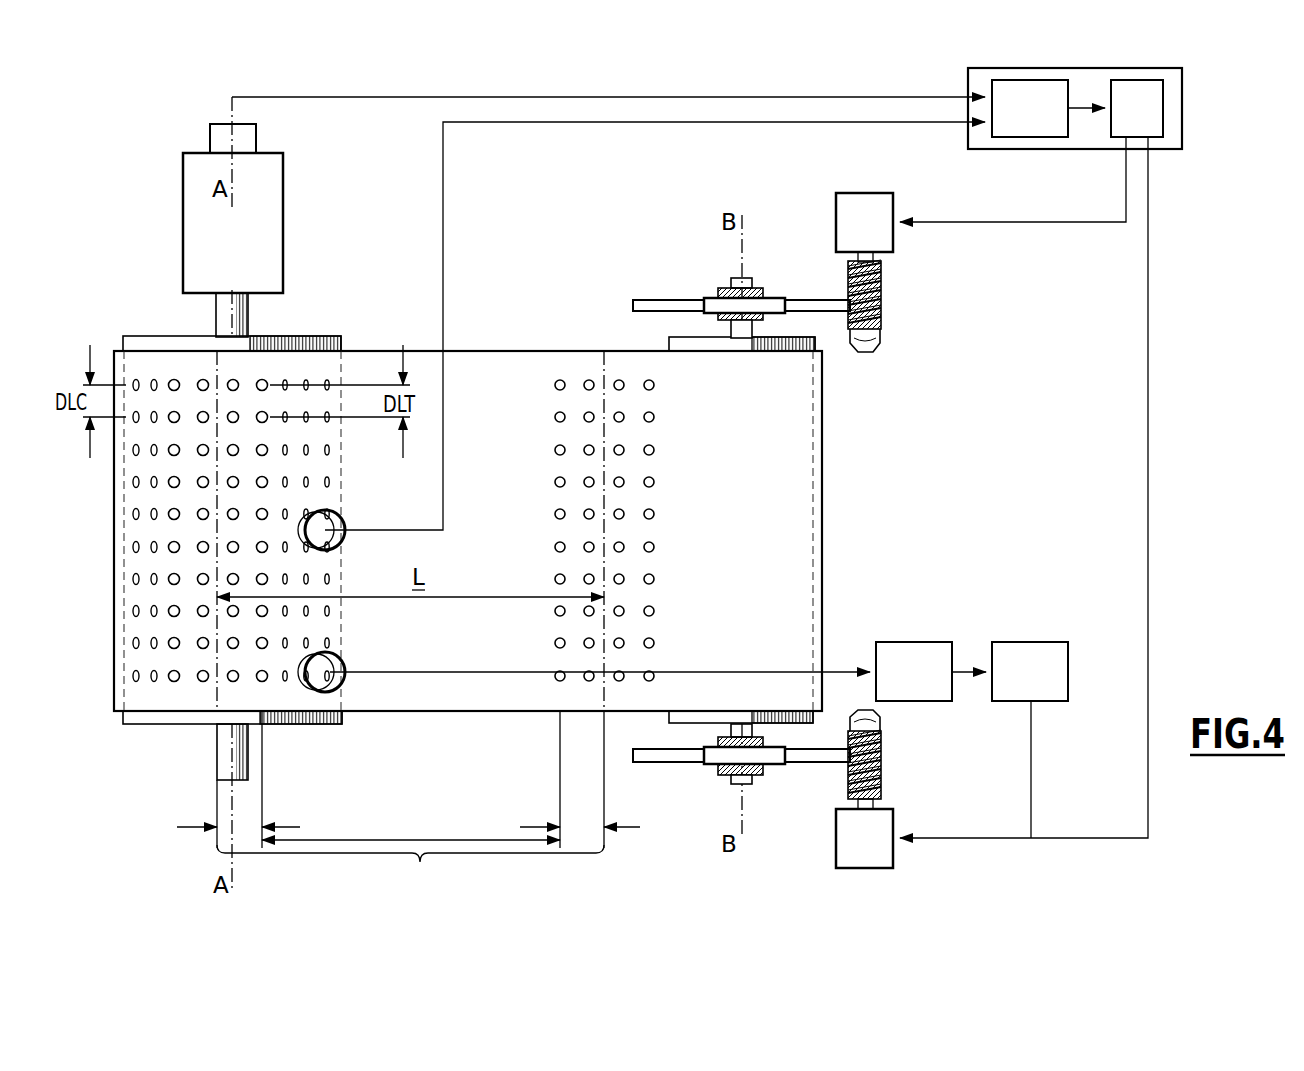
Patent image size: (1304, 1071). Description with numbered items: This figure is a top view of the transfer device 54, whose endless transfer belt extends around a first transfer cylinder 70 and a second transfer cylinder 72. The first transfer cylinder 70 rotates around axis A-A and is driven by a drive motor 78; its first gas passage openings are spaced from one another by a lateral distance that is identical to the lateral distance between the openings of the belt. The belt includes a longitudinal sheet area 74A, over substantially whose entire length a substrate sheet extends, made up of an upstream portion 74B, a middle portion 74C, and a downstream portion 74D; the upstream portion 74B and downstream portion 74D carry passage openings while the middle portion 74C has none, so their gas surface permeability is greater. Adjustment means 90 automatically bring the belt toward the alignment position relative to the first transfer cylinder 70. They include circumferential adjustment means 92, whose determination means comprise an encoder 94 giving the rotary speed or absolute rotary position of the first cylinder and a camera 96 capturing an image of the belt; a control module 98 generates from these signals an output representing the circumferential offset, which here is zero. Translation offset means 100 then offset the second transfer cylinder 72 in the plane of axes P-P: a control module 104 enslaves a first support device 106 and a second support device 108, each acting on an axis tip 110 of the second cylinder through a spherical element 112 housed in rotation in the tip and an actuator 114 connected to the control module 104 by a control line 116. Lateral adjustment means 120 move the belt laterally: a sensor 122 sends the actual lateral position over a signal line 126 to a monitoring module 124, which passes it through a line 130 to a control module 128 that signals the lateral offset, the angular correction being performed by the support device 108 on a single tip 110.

The transfer device 54 is at (168, 760).
The first transfer cylinder 70 is at (322, 336).
The second transfer cylinder 72 is at (672, 712).
The longitudinal sheet area 74A is at (410, 871).
The upstream portion 74B is at (256, 818).
The middle portion 74C is at (429, 830).
The downstream portion 74D is at (600, 818).
The drive motor 78 is at (265, 219).
The adjustment means 90 is at (1195, 245).
The circumferential adjustment means 92 is at (1162, 480).
The encoder 94 is at (213, 140).
The camera 96 is at (330, 528).
The control module 98 is at (1042, 122).
The translation offset means 100 is at (1175, 346).
The control module 104 is at (1155, 122).
The first support device 106 is at (860, 372).
The second support device 108 is at (905, 855).
The axis tip 110 is at (735, 332).
The spherical element 112 is at (760, 295).
The actuator 114 is at (822, 238).
The control line 116 is at (1126, 185).
The lateral adjustment means 120 is at (735, 708).
The sensor 122 is at (340, 685).
The monitoring module 124 is at (932, 687).
The signal line 126 is at (845, 672).
The control module 128 is at (1048, 687).
The line 130 is at (970, 665).